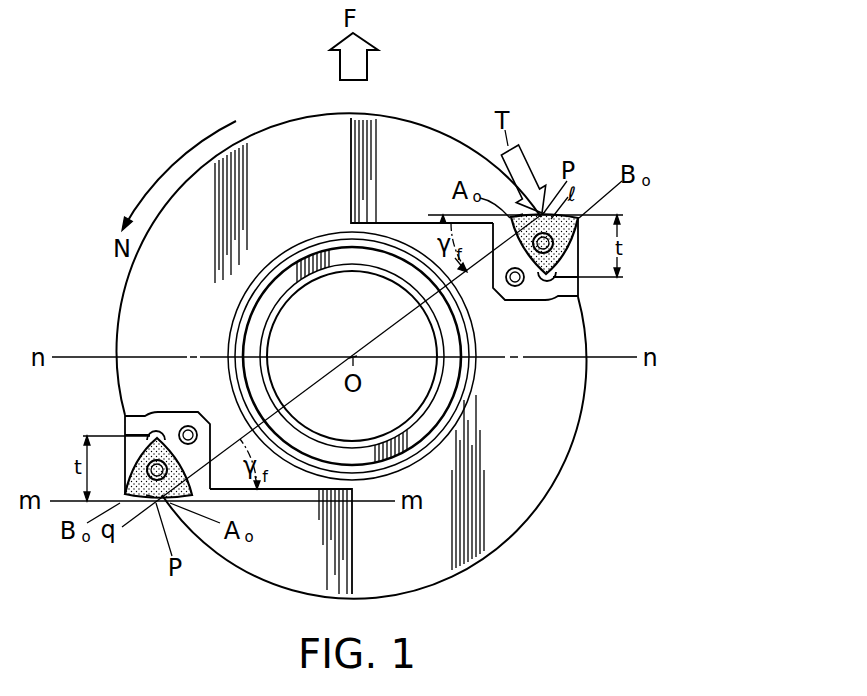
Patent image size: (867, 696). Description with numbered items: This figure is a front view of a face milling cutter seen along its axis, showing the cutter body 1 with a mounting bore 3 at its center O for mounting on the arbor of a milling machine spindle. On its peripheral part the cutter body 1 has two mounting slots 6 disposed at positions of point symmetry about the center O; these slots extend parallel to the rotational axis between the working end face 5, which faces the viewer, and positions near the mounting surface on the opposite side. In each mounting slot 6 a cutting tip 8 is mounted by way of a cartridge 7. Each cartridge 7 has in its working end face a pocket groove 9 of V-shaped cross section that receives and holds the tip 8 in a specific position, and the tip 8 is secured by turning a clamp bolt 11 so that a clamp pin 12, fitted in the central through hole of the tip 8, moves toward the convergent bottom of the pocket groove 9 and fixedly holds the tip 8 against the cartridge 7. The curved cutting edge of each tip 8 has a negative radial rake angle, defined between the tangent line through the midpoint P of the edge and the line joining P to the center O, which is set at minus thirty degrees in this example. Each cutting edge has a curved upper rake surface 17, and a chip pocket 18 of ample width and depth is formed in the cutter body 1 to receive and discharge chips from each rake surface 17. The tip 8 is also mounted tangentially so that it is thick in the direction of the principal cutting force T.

The cutter body 1 is at (498, 542).
The mounting bore 3 is at (284, 313).
The working end face 5 is at (288, 142).
The mounting slot 6 is at (578, 297).
The cartridge 7 is at (573, 266).
The cutting tip 8 is at (573, 218).
The pocket groove 9 is at (518, 241).
The clamp bolt 11 is at (516, 287).
The clamp pin 12 is at (150, 470).
The upper rake surface 17 is at (523, 208).
The chip pocket 18 is at (410, 143).